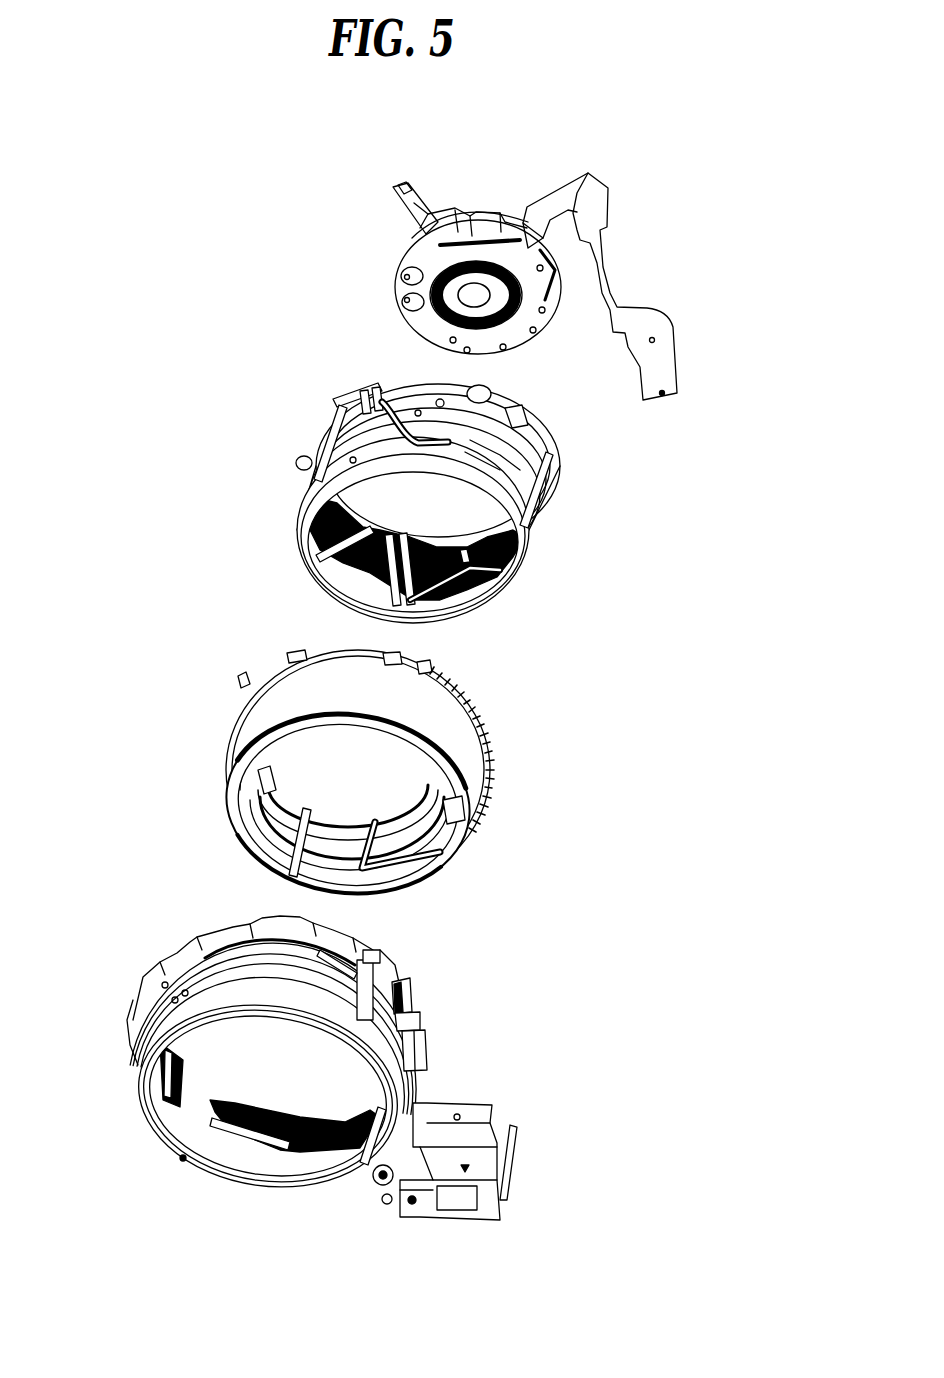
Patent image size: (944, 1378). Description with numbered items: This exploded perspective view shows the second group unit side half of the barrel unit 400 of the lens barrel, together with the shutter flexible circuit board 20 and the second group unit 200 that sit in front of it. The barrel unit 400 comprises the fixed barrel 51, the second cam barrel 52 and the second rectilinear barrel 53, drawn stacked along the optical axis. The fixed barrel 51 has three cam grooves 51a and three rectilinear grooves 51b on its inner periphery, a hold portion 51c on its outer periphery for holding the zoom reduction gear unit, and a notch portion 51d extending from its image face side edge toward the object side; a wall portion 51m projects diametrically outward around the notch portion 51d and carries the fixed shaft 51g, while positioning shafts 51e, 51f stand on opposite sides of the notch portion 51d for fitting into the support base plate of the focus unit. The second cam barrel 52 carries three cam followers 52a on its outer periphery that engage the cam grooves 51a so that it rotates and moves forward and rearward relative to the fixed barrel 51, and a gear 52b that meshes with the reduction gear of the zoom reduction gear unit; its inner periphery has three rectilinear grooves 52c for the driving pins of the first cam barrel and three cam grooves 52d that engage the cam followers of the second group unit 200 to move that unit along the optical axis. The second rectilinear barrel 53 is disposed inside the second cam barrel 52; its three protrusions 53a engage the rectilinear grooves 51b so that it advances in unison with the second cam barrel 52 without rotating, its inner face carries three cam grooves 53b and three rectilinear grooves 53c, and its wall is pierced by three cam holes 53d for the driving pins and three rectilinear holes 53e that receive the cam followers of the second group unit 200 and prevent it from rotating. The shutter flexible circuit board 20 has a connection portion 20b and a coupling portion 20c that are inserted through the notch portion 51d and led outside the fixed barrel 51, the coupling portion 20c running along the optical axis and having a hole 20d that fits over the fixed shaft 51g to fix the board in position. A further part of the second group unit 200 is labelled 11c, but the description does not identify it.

The barrel unit 400 is at (155, 623).
The second group unit 200 is at (372, 289).
The connector 11c is at (393, 190).
The shutter flexible circuit board 20 is at (612, 275).
The connection portion 20b is at (657, 358).
The coupling portion 20c is at (545, 202).
The hole 20d is at (588, 233).
The second rectilinear barrel 53 is at (530, 547).
The protrusions 53a is at (295, 462).
The cam grooves 53b is at (350, 577).
The rectilinear grooves 53c is at (367, 607).
The cam holes 53d is at (400, 408).
The rectilinear holes 53e is at (340, 423).
The second cam barrel 52 is at (467, 862).
The cam followers 52a is at (227, 730).
The gear 52b is at (488, 728).
The rectilinear grooves 52c is at (293, 857).
The cam grooves 52d is at (248, 788).
The fixed barrel 51 is at (133, 1138).
The cam grooves 51a is at (258, 1150).
The rectilinear grooves 51b is at (328, 1165).
The hold portion 51c is at (483, 1168).
The notch portion 51d is at (380, 1000).
The positioning shaft 51e is at (375, 980).
The positioning shaft 51f is at (405, 980).
The fixed shaft 51g is at (410, 1010).
The wall portion 51m is at (402, 1022).